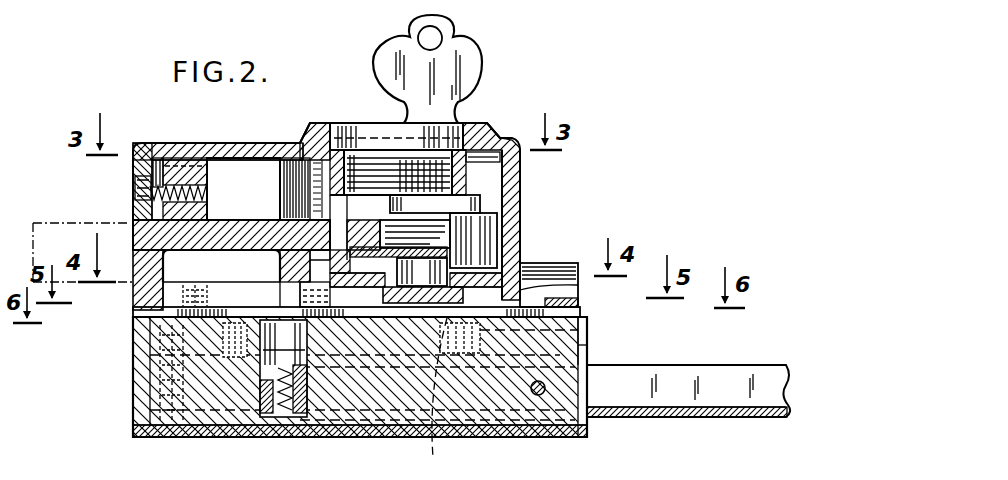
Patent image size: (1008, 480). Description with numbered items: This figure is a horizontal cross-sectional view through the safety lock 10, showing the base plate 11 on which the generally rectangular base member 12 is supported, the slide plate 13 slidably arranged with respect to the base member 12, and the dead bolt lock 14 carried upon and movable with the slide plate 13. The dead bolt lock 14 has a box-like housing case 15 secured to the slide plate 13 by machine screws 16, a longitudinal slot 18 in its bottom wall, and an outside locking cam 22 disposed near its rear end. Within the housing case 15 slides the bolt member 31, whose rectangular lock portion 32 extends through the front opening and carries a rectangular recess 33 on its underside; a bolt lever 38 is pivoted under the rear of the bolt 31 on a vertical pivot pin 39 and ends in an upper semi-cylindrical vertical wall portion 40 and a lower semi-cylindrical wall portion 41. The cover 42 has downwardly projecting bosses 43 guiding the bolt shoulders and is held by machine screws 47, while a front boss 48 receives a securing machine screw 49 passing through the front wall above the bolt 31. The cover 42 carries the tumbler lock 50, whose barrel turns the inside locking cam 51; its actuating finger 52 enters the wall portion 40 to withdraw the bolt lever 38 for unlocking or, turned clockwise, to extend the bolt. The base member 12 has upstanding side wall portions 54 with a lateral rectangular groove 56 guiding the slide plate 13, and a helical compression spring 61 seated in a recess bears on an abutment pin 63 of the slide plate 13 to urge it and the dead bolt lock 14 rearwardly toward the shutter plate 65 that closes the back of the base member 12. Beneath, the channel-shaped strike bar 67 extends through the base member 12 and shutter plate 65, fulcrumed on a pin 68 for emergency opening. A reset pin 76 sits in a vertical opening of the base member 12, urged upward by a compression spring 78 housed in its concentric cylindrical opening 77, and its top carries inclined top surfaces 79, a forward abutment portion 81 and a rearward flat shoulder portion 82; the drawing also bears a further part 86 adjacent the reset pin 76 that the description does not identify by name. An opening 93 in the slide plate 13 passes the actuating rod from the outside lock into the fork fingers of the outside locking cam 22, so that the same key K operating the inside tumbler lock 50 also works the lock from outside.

The safety lock 10 is at (129, 95).
The key K is at (478, 66).
The base plate 11 is at (530, 436).
The base member 12 is at (140, 383).
The slide plate 13 is at (583, 311).
The dead bolt lock 14 is at (193, 141).
The housing case 15 is at (512, 216).
The machine screws 16 is at (221, 272).
The longitudinal slot 18 is at (175, 308).
The outside locking cam 22 is at (549, 292).
The bolt member 31 is at (257, 222).
The lock portion 32 is at (132, 236).
The rectangular recess 33 is at (140, 258).
The bolt lever 38 is at (492, 210).
The pivot pin 39 is at (366, 220).
The semi-cylindrical vertical wall portion 40 is at (454, 212).
The semi-cylindrical lower wall portion 41 is at (497, 261).
The cover 42 is at (249, 141).
The downwardly projecting boss 43 is at (296, 185).
The machine screws 47 is at (309, 126).
The front boss 48 is at (207, 178).
The securing machine screw 49 is at (138, 183).
The tumbler lock 50 is at (364, 128).
The inside locking cam 51 is at (400, 220).
The actuating finger 52 is at (478, 203).
The upstanding side wall portions 54 is at (216, 312).
The lateral rectangular groove 56 is at (578, 299).
The helical compression spring 61 is at (445, 396).
The abutment pin 63 is at (583, 327).
The shutter plate 65 is at (583, 350).
The strike bar 67 is at (734, 376).
The pin 68 is at (547, 388).
The reset pin 76 is at (270, 392).
The concentric cylindrical opening 77 is at (271, 410).
The compression spring 78 is at (288, 416).
The inclined top surfaces 79 is at (345, 322).
The abutment portion 81 is at (300, 298).
The flat shoulder portion 82 is at (383, 300).
The lever 86 is at (305, 262).
The opening 93 is at (569, 268).